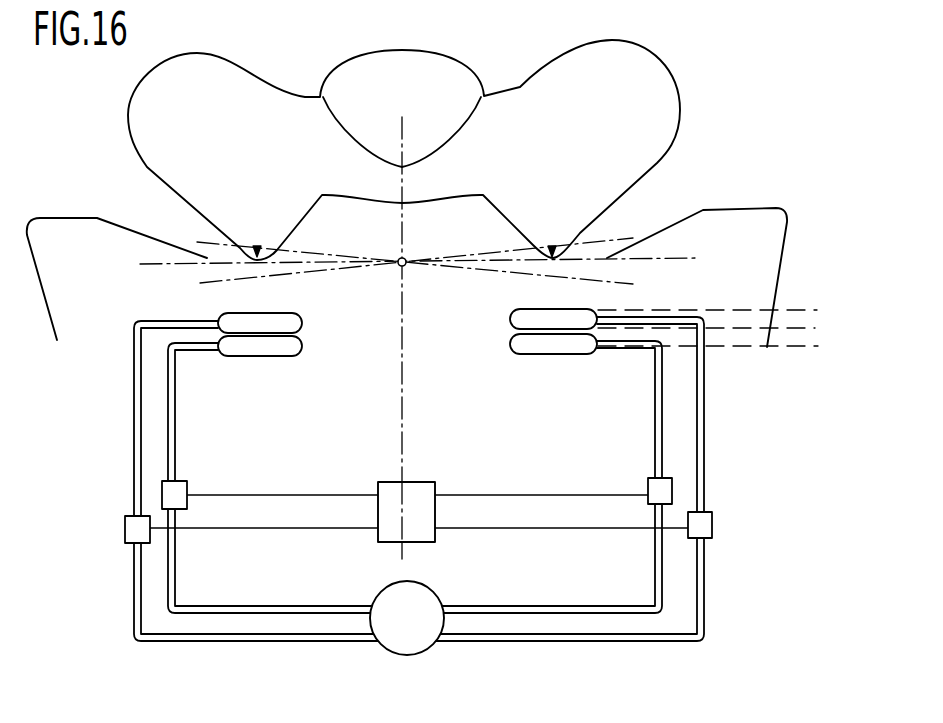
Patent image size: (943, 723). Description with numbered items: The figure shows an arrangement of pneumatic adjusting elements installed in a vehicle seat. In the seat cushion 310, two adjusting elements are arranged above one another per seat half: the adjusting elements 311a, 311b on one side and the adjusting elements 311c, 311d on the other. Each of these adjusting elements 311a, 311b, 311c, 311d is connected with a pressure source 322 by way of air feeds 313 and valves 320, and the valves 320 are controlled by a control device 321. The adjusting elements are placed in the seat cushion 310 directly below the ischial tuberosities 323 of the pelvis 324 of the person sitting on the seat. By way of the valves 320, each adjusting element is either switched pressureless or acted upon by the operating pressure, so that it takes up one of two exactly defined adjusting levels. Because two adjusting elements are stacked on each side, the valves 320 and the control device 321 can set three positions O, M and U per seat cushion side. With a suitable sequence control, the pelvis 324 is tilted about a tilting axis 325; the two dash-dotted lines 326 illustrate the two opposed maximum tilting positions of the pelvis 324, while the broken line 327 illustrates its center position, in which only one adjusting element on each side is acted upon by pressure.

The seat cushion 310 is at (757, 232).
The adjusting element 311a is at (292, 323).
The adjusting element 311b is at (292, 345).
The adjusting element 311c is at (542, 320).
The adjusting element 311d is at (577, 342).
The air feeds 313 is at (174, 422).
The valves 320 is at (172, 495).
The control device 321 is at (420, 495).
The pressure source 322 is at (422, 638).
The ischial tuberosities 323 is at (257, 247).
The pelvis 324 is at (647, 78).
The tilting axis 325 is at (413, 277).
The dash-dotted lines 326 is at (302, 248).
The broken line 327 is at (163, 267).
The position O is at (818, 307).
The position M is at (820, 328).
The position U is at (822, 347).